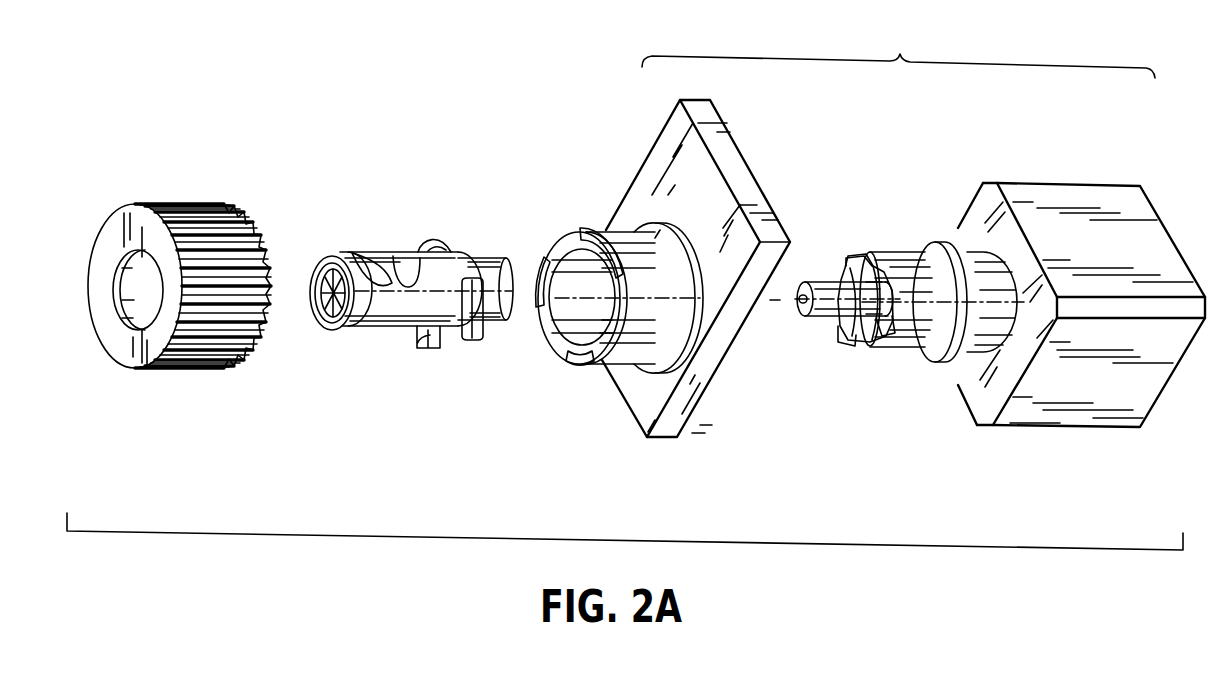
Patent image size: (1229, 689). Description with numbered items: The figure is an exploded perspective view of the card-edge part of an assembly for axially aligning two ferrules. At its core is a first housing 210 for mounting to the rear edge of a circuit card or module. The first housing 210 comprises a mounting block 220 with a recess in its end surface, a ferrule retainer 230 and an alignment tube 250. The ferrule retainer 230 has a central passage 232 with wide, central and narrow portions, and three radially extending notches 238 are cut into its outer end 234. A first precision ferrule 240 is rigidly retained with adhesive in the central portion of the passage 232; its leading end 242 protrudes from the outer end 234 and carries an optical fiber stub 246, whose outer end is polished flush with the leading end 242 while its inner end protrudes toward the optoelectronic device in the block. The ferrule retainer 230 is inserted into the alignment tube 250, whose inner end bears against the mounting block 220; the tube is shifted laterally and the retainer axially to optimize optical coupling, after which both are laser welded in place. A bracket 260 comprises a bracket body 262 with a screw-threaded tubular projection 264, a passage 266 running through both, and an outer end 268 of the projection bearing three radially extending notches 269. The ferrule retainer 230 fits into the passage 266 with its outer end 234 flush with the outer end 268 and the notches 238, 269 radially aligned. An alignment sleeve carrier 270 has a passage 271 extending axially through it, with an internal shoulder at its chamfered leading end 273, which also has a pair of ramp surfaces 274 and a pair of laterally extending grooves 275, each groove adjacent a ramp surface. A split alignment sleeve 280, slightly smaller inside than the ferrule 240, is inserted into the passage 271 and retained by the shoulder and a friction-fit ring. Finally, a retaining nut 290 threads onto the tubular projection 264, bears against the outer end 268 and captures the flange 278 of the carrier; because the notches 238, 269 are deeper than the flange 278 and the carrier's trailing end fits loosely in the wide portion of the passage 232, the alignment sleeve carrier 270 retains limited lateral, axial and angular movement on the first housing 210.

The first housing 210 is at (898, 50).
The mounting block 220 is at (1100, 183).
The ferrule retainer 230 is at (897, 250).
The central passage 232 is at (856, 345).
The outer end 234 is at (864, 344).
The radially extending notches 238 is at (847, 258).
The first precision ferrule 240 is at (803, 275).
The leading end 242 is at (801, 302).
The optical fiber stub 246 is at (798, 299).
The alignment tube 250 is at (940, 243).
The bracket 260 is at (677, 410).
The bracket body 262 is at (630, 340).
The screw-threaded tubular projection 264 is at (628, 370).
The passage 266 is at (542, 320).
The outer end 268 is at (545, 262).
The radially extending notches 269 is at (580, 230).
The alignment sleeve carrier 270 is at (385, 330).
The passage 271 is at (318, 316).
The leading end 273 is at (322, 325).
The ramp surfaces 274 is at (360, 260).
The laterally extending grooves 275 is at (402, 258).
The flange 278 is at (448, 245).
The split alignment sleeve 280 is at (318, 268).
The retaining nut 290 is at (205, 378).